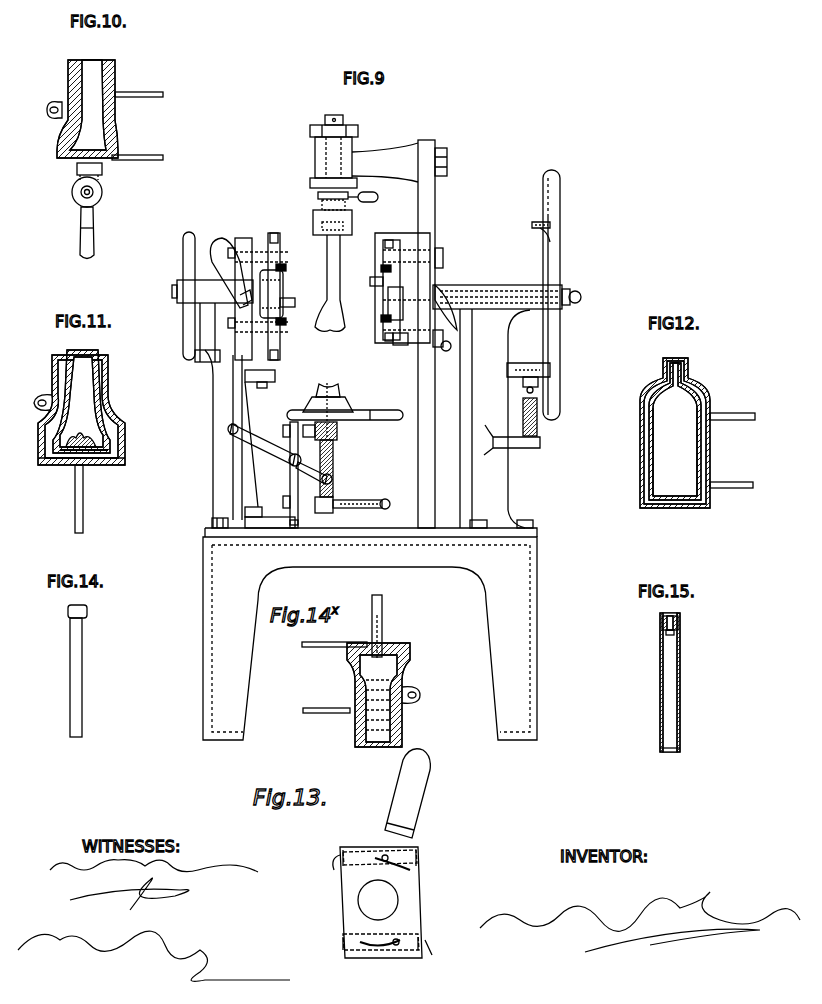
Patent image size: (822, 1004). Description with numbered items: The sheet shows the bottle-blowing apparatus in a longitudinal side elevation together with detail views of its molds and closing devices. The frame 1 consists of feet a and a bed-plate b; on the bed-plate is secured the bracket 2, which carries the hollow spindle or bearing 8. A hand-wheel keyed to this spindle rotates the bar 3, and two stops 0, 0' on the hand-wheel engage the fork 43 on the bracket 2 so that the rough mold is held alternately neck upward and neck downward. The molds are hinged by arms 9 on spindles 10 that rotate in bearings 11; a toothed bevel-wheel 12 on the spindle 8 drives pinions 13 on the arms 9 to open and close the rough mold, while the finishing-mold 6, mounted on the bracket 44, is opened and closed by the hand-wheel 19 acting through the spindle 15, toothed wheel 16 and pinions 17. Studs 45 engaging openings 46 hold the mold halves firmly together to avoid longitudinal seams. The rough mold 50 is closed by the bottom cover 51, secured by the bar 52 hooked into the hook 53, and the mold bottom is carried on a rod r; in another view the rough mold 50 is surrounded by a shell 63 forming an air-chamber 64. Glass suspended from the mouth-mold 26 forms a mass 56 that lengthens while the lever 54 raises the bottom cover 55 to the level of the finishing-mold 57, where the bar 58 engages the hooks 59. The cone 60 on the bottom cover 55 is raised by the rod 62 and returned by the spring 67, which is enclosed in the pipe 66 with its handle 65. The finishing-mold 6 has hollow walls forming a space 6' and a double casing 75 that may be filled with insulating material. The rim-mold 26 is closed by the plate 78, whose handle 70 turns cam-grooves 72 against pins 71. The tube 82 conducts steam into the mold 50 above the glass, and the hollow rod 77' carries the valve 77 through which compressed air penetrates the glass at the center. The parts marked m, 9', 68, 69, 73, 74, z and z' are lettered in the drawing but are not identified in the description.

In FIG. 9, the frame 1 is at (418, 565).
In FIG. 9, the feet a is at (360, 580).
In FIG. 9, the bed-plate b is at (372, 557).
In FIG. 9, the bracket 2 is at (496, 418).
In FIG. 9, the bar 3 is at (432, 334).
In FIG. 9, the hollow spindle 8 is at (506, 287).
In FIG. 9, the knob m is at (582, 298).
In FIG. 9, the stop 0 is at (538, 295).
In FIG. 9, the stop 0' is at (520, 352).
In FIG. 11, the rod r is at (83, 508).
In FIG. 9, the rod r is at (528, 369).
In FIG. 9, the fork 43 is at (522, 385).
In FIG. 10, the arms 9 is at (140, 115).
In FIG. 12, the arms 9 is at (732, 455).
In FIG. 14X, the arms 9 is at (326, 699).
In FIG. 9, the arms 9 is at (382, 333).
In FIG. 14X, the lever arm 9' is at (334, 652).
In FIG. 9, the lever arm 9' is at (446, 321).
In FIG. 9, the spindles 10 is at (388, 292).
In FIG. 9, the bearings 11 is at (250, 242).
In FIG. 9, the toothed bevel-wheel 12 is at (388, 304).
In FIG. 9, the pinions 13 is at (381, 270).
In FIG. 9, the spindle 15 is at (212, 321).
In FIG. 9, the toothed wheel 16 is at (283, 292).
In FIG. 9, the pinions 17 is at (286, 268).
In FIG. 9, the hand-wheel 19 is at (192, 236).
In FIG. 9, the mouth-mold 26 is at (352, 225).
In FIG. 9, the bracket 44 is at (231, 439).
In FIG. 9, the studs 45 is at (295, 302).
In FIG. 10, the openings 46 is at (47, 110).
In FIG. 11, the openings 46 is at (36, 400).
In FIG. 10, the rough mold 50 is at (104, 144).
In FIG. 11, the rough mold 50 is at (70, 423).
In FIG. 14X, the rough mold 50 is at (405, 668).
In FIG. 9, the rough mold 50 is at (400, 232).
In FIG. 10, the bottom cover 51 is at (103, 190).
In FIG. 11, the bottom cover 51 is at (110, 451).
In FIG. 10, the bar 52 is at (90, 240).
In FIG. 9, the hook 53 is at (400, 345).
In FIG. 9, the lever 54 is at (258, 437).
In FIG. 11, the bottom cover 55 is at (100, 466).
In FIG. 9, the bottom cover 55 is at (348, 405).
In FIG. 9, the mass 56 is at (330, 292).
In FIG. 9, the finishing-mold 57 is at (280, 236).
In FIG. 9, the bar 58 is at (290, 418).
In FIG. 9, the hooks 59 is at (270, 388).
In FIG. 9, the cone 60 is at (332, 388).
In FIG. 9, the rod 62 is at (333, 470).
In FIG. 11, the shell 63 is at (45, 440).
In FIG. 11, the air-chamber 64 is at (58, 382).
In FIG. 9, the handle 65 is at (388, 502).
In FIG. 9, the pipe 66 is at (366, 500).
In FIG. 9, the spring 67 is at (333, 458).
In FIG. 9, the block 68 is at (335, 500).
In FIG. 9, the nut block 69 is at (337, 431).
In FIG. 13, the handle 70 is at (428, 792).
In FIG. 9, the handle 70 is at (372, 193).
In FIG. 13, the pins 71 is at (378, 852).
In FIG. 13, the cam-grooves 72 is at (410, 853).
In FIG. 9, the cam-grooves 72 is at (364, 151).
In FIG. 9, the rod 73 is at (292, 480).
In FIG. 9, the bolt 74 is at (297, 528).
In FIG. 12, the double casing 75 is at (700, 465).
In FIG. 12, the finishing-mold 6 is at (658, 433).
In FIG. 12, the space 6' is at (655, 431).
In FIG. 15, the valve 77 is at (689, 624).
In FIG. 15, the rod 77' is at (687, 682).
In FIG. 13, the plate 78 is at (410, 894).
In FIG. 9, the plate 78 is at (318, 196).
In FIG. 14X, the tube 82 is at (382, 624).
In FIG. 14, the pin z is at (86, 677).
In FIG. 14, the pin head z' is at (85, 610).